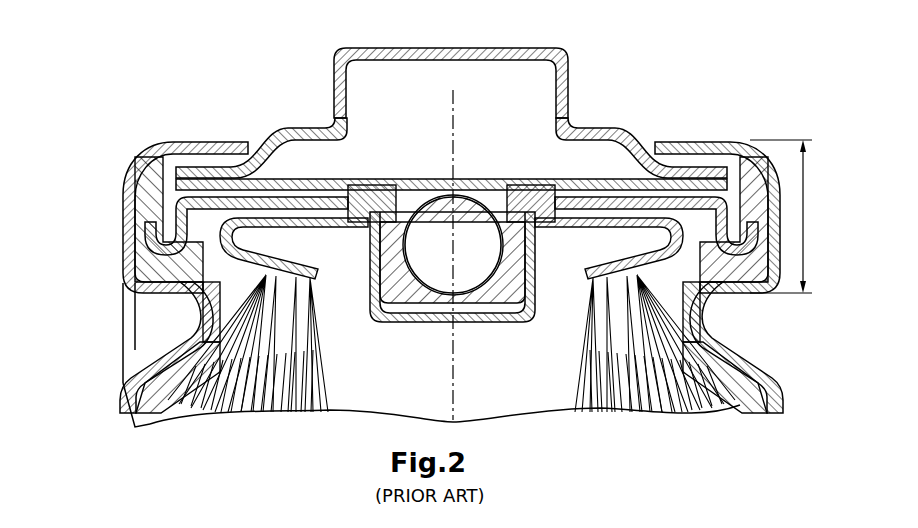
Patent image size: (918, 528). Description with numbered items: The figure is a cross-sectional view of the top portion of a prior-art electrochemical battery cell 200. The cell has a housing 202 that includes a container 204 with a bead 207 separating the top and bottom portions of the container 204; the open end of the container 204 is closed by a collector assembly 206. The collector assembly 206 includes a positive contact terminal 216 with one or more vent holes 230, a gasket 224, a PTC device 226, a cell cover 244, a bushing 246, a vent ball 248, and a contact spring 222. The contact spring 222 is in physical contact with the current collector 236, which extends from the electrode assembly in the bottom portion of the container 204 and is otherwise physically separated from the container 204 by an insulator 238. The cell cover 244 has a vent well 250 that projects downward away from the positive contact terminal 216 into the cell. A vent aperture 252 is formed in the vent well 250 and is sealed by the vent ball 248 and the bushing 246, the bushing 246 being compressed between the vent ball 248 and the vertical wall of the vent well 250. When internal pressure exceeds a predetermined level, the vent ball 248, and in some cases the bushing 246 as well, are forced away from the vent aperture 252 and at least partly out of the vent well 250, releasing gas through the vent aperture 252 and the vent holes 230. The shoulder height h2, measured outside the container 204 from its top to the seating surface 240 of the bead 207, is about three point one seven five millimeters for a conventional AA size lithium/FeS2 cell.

The electrochemical battery cell 200 is at (245, 68).
The housing 202 is at (118, 160).
The container 204 is at (128, 420).
The collector assembly 206 is at (625, 98).
The bead 207 is at (137, 363).
The positive contact terminal 216 is at (547, 49).
The contact spring 222 is at (541, 312).
The gasket 224 is at (150, 158).
The PTC device 226 is at (123, 200).
The vent holes 230 is at (300, 137).
The current collector 236 is at (720, 330).
The insulator 238 is at (750, 385).
The seating surface 240 is at (730, 297).
The cell cover 244 is at (136, 283).
The bushing 246 is at (193, 308).
The vent ball 248 is at (430, 272).
The vent well 250 is at (383, 265).
The vent aperture 252 is at (482, 298).
The shoulder height h2 is at (782, 216).